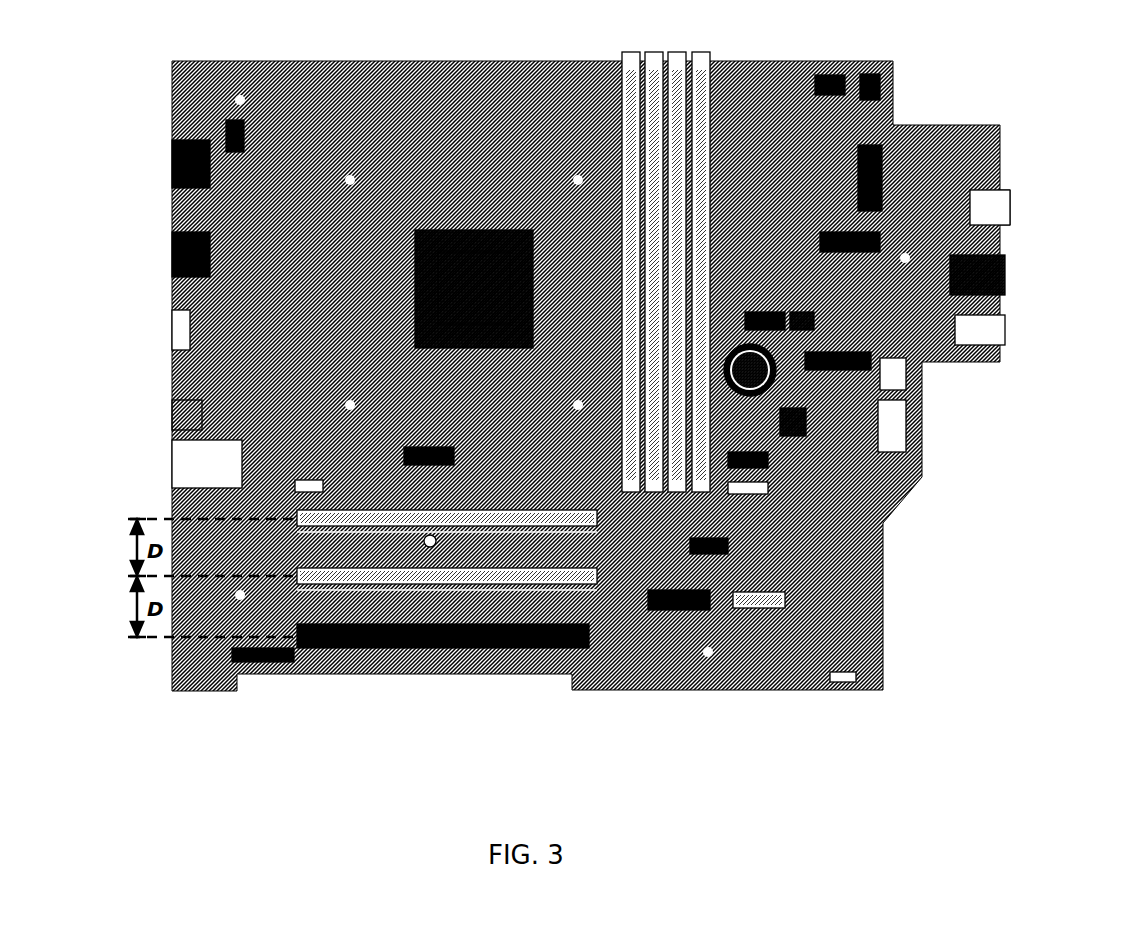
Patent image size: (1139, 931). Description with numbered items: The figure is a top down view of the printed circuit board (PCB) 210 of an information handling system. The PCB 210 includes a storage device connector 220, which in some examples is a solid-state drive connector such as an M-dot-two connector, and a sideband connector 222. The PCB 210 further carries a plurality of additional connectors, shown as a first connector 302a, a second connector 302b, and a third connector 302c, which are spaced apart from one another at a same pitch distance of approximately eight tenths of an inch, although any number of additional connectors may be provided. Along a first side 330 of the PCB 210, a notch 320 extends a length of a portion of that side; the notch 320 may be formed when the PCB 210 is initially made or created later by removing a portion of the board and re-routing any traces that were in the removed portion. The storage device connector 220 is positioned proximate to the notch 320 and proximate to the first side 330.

The printed circuit board 210 is at (993, 44).
The first connector 302a is at (593, 648).
The second connector 302b is at (415, 584).
The third connector 302c is at (280, 496).
The storage device connector 220 is at (672, 630).
The sideband connector 222 is at (767, 630).
The notch 320 is at (575, 712).
The first side 330 is at (878, 688).